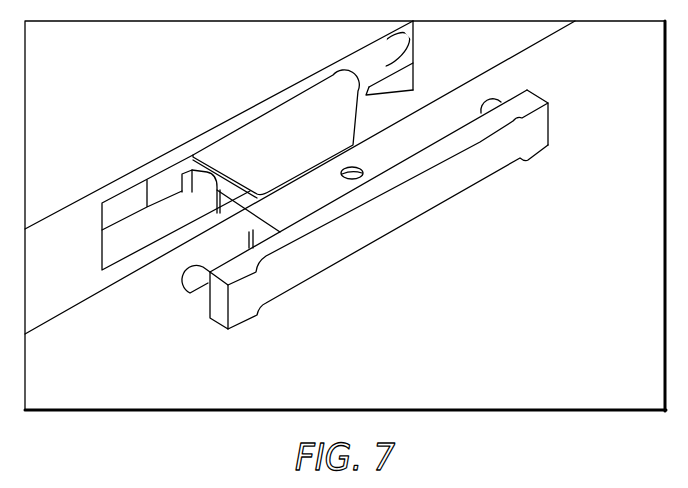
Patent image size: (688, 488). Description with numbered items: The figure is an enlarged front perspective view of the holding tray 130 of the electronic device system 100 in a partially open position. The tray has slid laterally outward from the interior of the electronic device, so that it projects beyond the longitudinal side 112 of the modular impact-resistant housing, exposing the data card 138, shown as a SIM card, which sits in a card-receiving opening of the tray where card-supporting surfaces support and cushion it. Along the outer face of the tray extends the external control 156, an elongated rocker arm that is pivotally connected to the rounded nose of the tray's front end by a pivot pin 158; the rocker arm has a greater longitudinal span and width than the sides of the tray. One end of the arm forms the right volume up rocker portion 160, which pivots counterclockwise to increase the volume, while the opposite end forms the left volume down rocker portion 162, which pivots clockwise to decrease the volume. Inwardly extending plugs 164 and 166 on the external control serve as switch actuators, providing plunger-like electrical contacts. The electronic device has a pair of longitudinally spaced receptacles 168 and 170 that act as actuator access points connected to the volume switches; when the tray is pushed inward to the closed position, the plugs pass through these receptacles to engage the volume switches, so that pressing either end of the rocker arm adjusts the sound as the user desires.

The electronic device system 100 is at (373, 211).
The longitudinal side 112 is at (53, 262).
The holding tray 130 is at (243, 200).
The data card 138 is at (281, 118).
The external control 156 is at (370, 243).
The pivot pin 158 is at (363, 175).
The right volume up rocker portion 160 is at (532, 160).
The left volume down rocker portion 162 is at (216, 323).
The plug 164 is at (497, 95).
The plug 166 is at (197, 283).
The receptacle 168 is at (387, 47).
The receptacle 170 is at (107, 212).